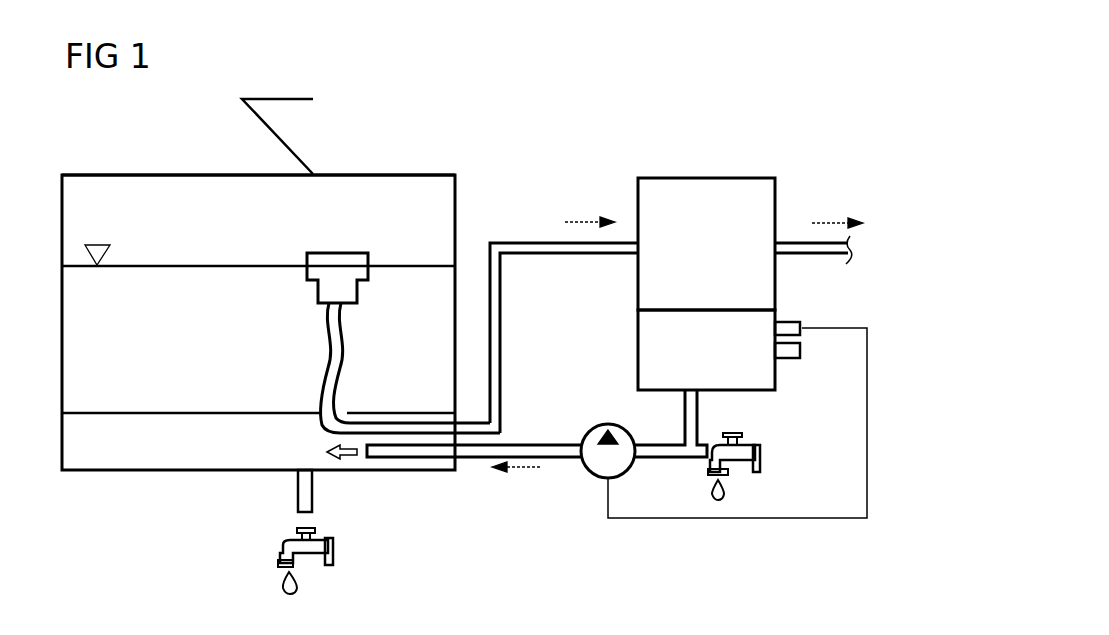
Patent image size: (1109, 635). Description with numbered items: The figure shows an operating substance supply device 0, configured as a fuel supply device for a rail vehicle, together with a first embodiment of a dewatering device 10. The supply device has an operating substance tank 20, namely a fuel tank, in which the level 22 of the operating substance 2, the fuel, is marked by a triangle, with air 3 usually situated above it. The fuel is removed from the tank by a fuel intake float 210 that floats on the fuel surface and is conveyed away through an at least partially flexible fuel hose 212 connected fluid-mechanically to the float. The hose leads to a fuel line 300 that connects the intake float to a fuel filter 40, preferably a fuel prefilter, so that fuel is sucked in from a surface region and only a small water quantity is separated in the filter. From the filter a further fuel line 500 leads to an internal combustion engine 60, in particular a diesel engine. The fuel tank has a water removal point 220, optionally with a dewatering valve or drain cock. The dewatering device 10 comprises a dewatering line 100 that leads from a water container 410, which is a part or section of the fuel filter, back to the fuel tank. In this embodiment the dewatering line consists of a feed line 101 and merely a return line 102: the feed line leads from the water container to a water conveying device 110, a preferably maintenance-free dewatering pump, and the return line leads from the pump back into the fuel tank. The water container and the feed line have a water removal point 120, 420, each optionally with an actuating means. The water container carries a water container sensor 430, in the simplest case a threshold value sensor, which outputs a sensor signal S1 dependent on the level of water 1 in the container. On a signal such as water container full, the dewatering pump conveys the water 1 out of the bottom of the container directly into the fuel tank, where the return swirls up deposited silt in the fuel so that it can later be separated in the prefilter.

The operating substance supply device 0 is at (453, 108).
The water 1 is at (224, 458).
The operating substance 2 is at (142, 400).
The air 3 is at (247, 188).
The dewatering device 10 is at (594, 537).
The operating substance tank 20 is at (118, 472).
The level 22 is at (108, 258).
The fuel filter 40 is at (707, 178).
The internal combustion engine 60 is at (928, 264).
The dewatering line 100 is at (557, 460).
The feed line 101 is at (697, 405).
The return line 102 is at (400, 460).
The water conveying device 110 is at (590, 430).
The water removal point 120 is at (740, 466).
The fuel intake float 210 is at (338, 262).
The fuel hose 212 is at (333, 358).
The water removal point 220 is at (283, 554).
The fuel line 300 is at (503, 330).
The water container 410 is at (637, 330).
The water removal point 420 is at (758, 530).
The water container sensor 430 is at (800, 340).
The fuel line 500 is at (818, 258).
The sensor signal S1 is at (670, 518).